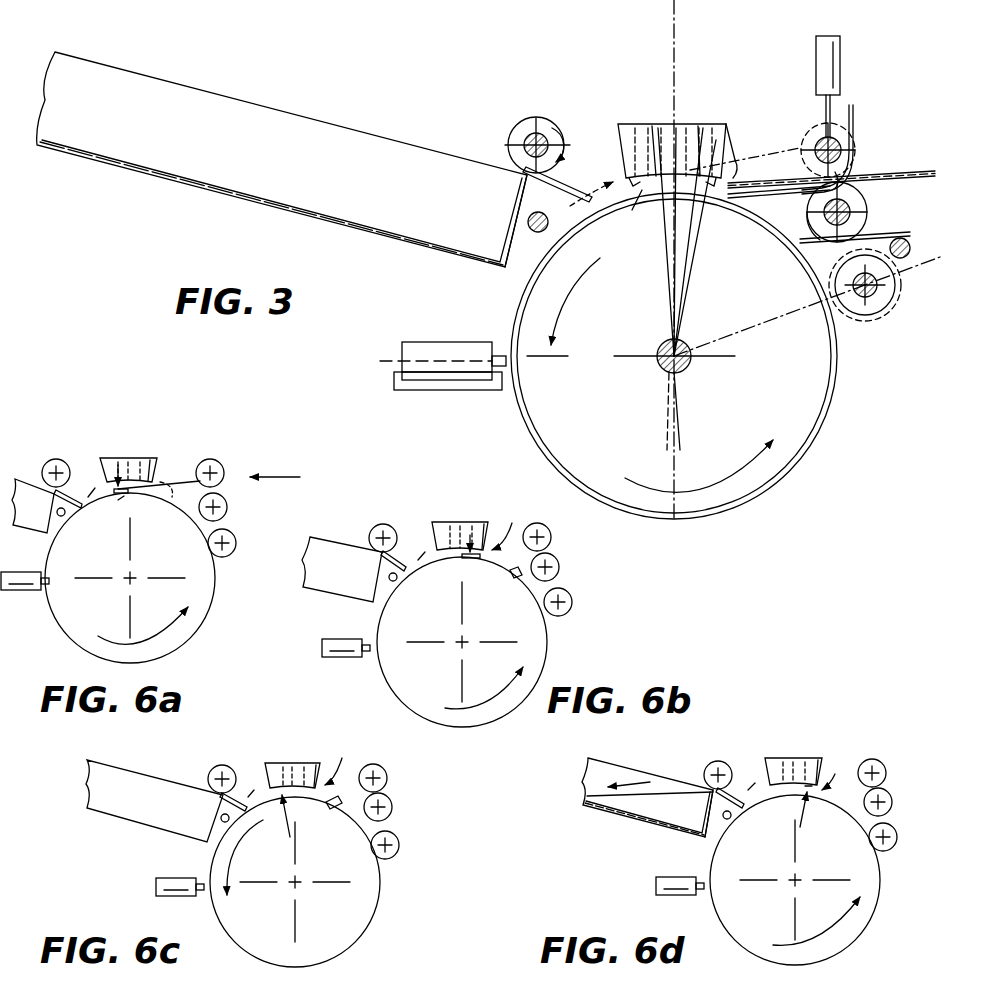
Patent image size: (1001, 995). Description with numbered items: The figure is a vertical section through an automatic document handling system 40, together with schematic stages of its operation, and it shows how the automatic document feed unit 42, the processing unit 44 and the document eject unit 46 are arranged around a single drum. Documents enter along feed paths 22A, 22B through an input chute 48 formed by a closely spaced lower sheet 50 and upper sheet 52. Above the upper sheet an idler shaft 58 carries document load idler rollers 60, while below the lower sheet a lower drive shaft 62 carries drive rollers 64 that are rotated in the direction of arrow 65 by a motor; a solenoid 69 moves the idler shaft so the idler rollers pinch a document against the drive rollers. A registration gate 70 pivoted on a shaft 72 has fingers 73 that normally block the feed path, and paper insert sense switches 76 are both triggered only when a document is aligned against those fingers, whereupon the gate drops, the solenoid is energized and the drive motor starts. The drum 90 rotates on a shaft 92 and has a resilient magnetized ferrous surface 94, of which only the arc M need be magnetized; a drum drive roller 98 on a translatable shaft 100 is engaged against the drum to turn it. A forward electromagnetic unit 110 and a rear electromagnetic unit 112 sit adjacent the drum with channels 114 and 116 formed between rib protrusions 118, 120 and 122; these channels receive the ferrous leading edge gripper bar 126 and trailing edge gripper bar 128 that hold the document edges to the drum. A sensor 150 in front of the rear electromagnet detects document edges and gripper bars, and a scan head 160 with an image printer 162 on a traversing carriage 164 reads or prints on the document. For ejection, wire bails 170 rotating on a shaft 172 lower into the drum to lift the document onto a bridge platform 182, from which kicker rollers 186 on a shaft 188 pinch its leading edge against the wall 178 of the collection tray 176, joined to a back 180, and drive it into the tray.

In FIG. 3, the feed path 22A is at (415, 8).
In FIG. 3, the feed path 22B is at (513, 8).
In FIG. 3, the automatic document handling system 40 is at (728, 45).
In FIG. 3, the automatic document feed unit 42 is at (897, 140).
In FIG. 3, the processing unit 44 is at (495, 405).
In FIG. 3, the document eject unit 46 is at (507, 140).
In FIG. 3, the input chute 48 is at (870, 170).
In FIG. 3, the lower sheet 50 is at (916, 183).
In FIG. 3, the upper sheet 52 is at (856, 112).
In FIG. 3, the idler shaft 58 is at (818, 147).
In FIG. 3, the document load idler rollers 60 is at (821, 140).
In FIG. 6A, the document load idler rollers 60 is at (224, 471).
In FIG. 6B, the document load idler rollers 60 is at (543, 524).
In FIG. 6C, the document load idler rollers 60 is at (385, 768).
In FIG. 6D, the document load idler rollers 60 is at (885, 762).
In FIG. 3, the lower drive shaft 62 is at (812, 236).
In FIG. 3, the drive rollers 64 is at (861, 201).
In FIG. 6A, the drive rollers 64 is at (227, 510).
In FIG. 6B, the drive rollers 64 is at (560, 565).
In FIG. 6C, the drive rollers 64 is at (392, 803).
In FIG. 6D, the drive rollers 64 is at (893, 800).
In FIG. 3, the arrow 65 is at (862, 223).
In FIG. 3, the solenoid 69 is at (841, 53).
In FIG. 3, the registration gate 70 is at (835, 266).
In FIG. 3, the shaft 72 is at (906, 250).
In FIG. 3, the fingers 73 is at (812, 203).
In FIG. 3, the paper insert sense switches 76 is at (855, 165).
In FIG. 3, the drum 90 is at (810, 430).
In FIG. 6A, the drum 90 is at (198, 594).
In FIG. 6B, the drum 90 is at (535, 645).
In FIG. 6C, the drum 90 is at (362, 908).
In FIG. 6D, the drum 90 is at (855, 923).
In FIG. 3, the shaft 92 is at (691, 366).
In FIG. 3, the magnetized ferrous surface 94 is at (768, 497).
In FIG. 3, the drum drive roller 98 is at (881, 311).
In FIG. 6A, the drum drive roller 98 is at (233, 548).
In FIG. 6B, the drum drive roller 98 is at (572, 600).
In FIG. 6C, the drum drive roller 98 is at (400, 843).
In FIG. 6D, the drum drive roller 98 is at (898, 838).
In FIG. 3, the shaft 100 is at (862, 318).
In FIG. 3, the forward electromagnetic unit 110 is at (640, 125).
In FIG. 6A, the forward electromagnetic unit 110 is at (120, 457).
In FIG. 6B, the forward electromagnetic unit 110 is at (447, 520).
In FIG. 6C, the forward electromagnetic unit 110 is at (288, 762).
In FIG. 6D, the forward electromagnetic unit 110 is at (790, 757).
In FIG. 3, the rear electromagnetic unit 112 is at (699, 125).
In FIG. 6A, the rear electromagnetic unit 112 is at (151, 480).
In FIG. 6B, the rear electromagnetic unit 112 is at (485, 521).
In FIG. 6C, the rear electromagnetic unit 112 is at (310, 762).
In FIG. 6D, the rear electromagnetic unit 112 is at (822, 757).
In FIG. 3, the channel 114 is at (652, 125).
In FIG. 3, the channel 116 is at (741, 136).
In FIG. 3, the rib protrusion 118 is at (632, 210).
In FIG. 3, the rib protrusion 120 is at (669, 250).
In FIG. 3, the rib protrusion 122 is at (712, 208).
In FIG. 3, the leading edge gripper bar 126 is at (656, 225).
In FIG. 6A, the leading edge gripper bar 126 is at (120, 500).
In FIG. 6B, the leading edge gripper bar 126 is at (513, 578).
In FIG. 6C, the leading edge gripper bar 126 is at (332, 808).
In FIG. 6D, the leading edge gripper bar 126 is at (808, 770).
In FIG. 3, the trailing edge gripper bar 128 is at (701, 228).
In FIG. 6A, the trailing edge gripper bar 128 is at (130, 488).
In FIG. 6B, the trailing edge gripper bar 128 is at (467, 563).
In FIG. 6C, the trailing edge gripper bar 128 is at (280, 790).
In FIG. 6D, the trailing edge gripper bar 128 is at (788, 763).
In FIG. 3, the sensor 150 is at (737, 160).
In FIG. 6A, the sensor 150 is at (167, 498).
In FIG. 6B, the sensor 150 is at (512, 527).
In FIG. 6C, the sensor 150 is at (346, 762).
In FIG. 6D, the sensor 150 is at (842, 772).
In FIG. 3, the scan head 160 is at (397, 327).
In FIG. 6A, the scan head 160 is at (22, 598).
In FIG. 6B, the scan head 160 is at (353, 660).
In FIG. 6C, the scan head 160 is at (142, 892).
In FIG. 6D, the scan head 160 is at (645, 892).
In FIG. 3, the image printer 162 is at (471, 342).
In FIG. 3, the carriage 164 is at (401, 379).
In FIG. 3, the wire bails 170 is at (590, 184).
In FIG. 6A, the wire bails 170 is at (88, 497).
In FIG. 6B, the wire bails 170 is at (418, 560).
In FIG. 6C, the wire bails 170 is at (248, 796).
In FIG. 6D, the wire bails 170 is at (748, 790).
In FIG. 3, the shaft 172 is at (529, 226).
In FIG. 3, the collection tray 176 is at (152, 186).
In FIG. 6A, the collection tray 176 is at (25, 513).
In FIG. 6B, the collection tray 176 is at (350, 598).
In FIG. 6C, the collection tray 176 is at (140, 823).
In FIG. 6D, the collection tray 176 is at (620, 822).
In FIG. 3, the wall 178 is at (513, 222).
In FIG. 6D, the wall 178 is at (703, 820).
In FIG. 3, the back 180 is at (276, 208).
In FIG. 6D, the back 180 is at (663, 832).
In FIG. 3, the bridge platform 182 is at (531, 180).
In FIG. 6A, the bridge platform 182 is at (84, 500).
In FIG. 6B, the bridge platform 182 is at (412, 555).
In FIG. 6C, the bridge platform 182 is at (218, 803).
In FIG. 6D, the bridge platform 182 is at (715, 803).
In FIG. 3, the kicker rollers 186 is at (546, 124).
In FIG. 6A, the kicker rollers 186 is at (52, 458).
In FIG. 6B, the kicker rollers 186 is at (383, 522).
In FIG. 6C, the kicker rollers 186 is at (210, 768).
In FIG. 6D, the kicker rollers 186 is at (712, 762).
In FIG. 3, the shaft 188 is at (546, 140).
In FIG. 3, the arc M is at (575, 300).